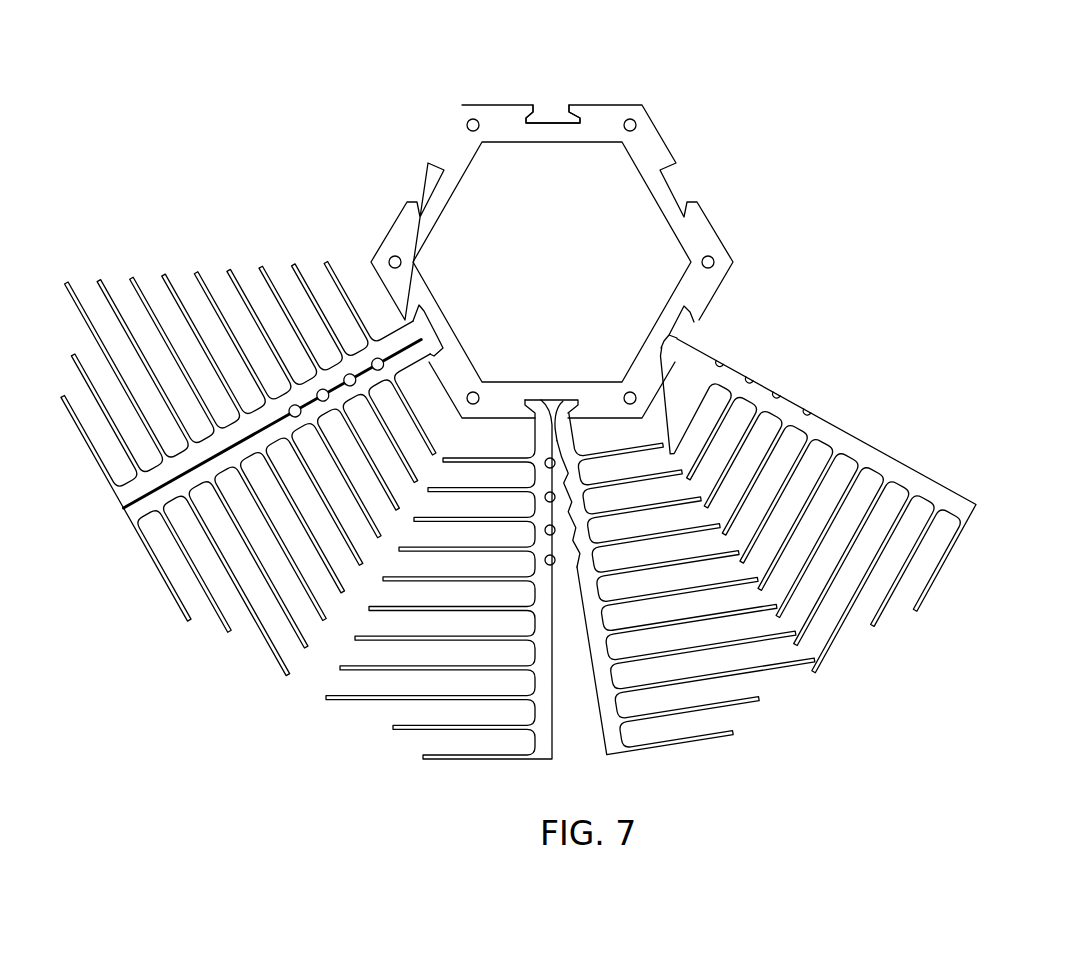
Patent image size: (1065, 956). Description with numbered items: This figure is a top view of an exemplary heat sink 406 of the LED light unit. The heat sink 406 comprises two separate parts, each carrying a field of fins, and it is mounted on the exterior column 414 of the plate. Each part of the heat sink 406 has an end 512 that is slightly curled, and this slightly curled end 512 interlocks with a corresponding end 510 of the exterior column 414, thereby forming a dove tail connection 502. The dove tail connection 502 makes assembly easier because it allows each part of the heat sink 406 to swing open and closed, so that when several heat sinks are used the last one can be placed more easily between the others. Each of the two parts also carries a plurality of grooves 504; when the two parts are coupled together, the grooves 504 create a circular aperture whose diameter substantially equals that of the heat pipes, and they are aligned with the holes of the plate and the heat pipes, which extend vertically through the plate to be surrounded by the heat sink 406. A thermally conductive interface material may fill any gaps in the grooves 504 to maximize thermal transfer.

The heat sink 406 is at (523, 451).
The exterior column 414 is at (553, 116).
The dove tail connection 502 is at (563, 404).
The grooves 504 is at (580, 558).
The end of the exterior column 510 is at (696, 204).
The slightly curled end 512 is at (416, 311).